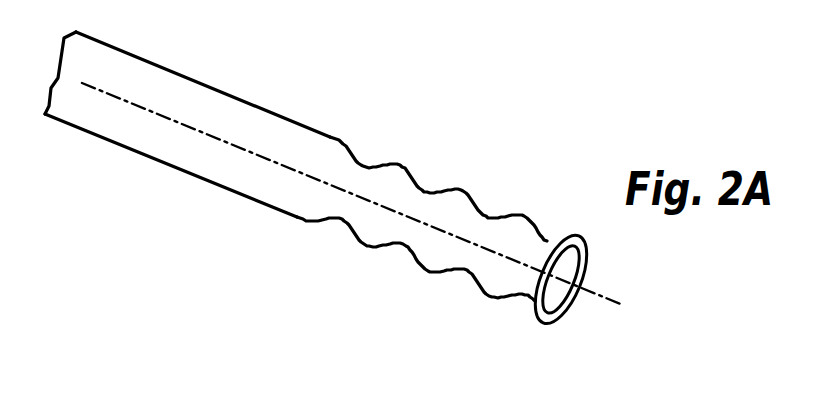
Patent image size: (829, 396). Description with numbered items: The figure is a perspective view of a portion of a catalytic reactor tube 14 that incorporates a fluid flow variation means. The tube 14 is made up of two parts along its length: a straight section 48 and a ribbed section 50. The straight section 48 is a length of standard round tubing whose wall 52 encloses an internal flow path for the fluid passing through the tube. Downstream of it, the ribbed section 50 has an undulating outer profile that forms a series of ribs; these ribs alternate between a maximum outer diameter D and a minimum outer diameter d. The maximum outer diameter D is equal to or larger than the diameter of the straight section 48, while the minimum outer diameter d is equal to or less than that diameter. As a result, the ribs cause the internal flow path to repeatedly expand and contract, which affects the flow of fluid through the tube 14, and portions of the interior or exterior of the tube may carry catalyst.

The catalytic reactor tube 14 is at (327, 190).
The wall 52 is at (185, 87).
The straight section 48 is at (300, 235).
The ribbed section 50 is at (535, 348).
The maximum outer diameter D is at (360, 274).
The minimum outer diameter d is at (395, 275).